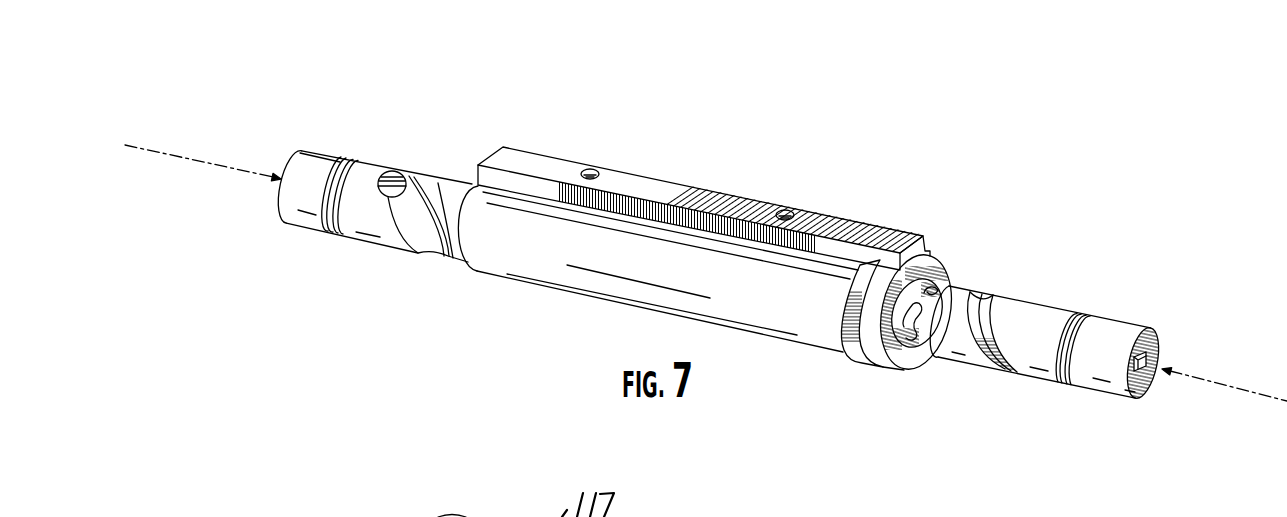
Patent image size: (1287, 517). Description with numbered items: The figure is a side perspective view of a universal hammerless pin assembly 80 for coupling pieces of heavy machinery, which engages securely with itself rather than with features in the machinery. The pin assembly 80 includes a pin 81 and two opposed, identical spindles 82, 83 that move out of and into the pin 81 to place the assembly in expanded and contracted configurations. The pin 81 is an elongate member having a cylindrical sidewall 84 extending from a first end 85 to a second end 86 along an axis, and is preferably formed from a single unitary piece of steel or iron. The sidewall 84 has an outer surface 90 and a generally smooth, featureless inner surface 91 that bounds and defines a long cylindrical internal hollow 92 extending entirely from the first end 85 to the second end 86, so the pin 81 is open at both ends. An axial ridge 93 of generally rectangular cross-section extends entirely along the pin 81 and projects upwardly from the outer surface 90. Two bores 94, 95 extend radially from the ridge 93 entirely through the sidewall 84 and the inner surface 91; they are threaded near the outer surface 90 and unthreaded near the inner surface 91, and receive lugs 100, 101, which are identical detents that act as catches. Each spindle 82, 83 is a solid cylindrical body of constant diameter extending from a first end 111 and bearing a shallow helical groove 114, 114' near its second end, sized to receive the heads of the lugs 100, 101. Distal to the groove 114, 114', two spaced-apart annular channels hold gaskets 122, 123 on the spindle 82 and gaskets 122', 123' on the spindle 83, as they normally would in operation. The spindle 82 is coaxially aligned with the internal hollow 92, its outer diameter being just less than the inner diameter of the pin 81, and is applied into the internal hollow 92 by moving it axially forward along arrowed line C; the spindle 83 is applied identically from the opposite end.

The pin assembly 80 is at (453, 352).
The pin 81 is at (732, 189).
The spindle 82 is at (1042, 295).
The spindle 83 is at (379, 168).
The cylindrical sidewall 84 is at (551, 288).
The first end 85 is at (918, 348).
The second end 86 is at (465, 272).
The outer surface 90 is at (806, 345).
The inner surface 91 is at (934, 286).
The internal hollow 92 is at (873, 368).
The axial ridge 93 is at (884, 238).
The bore 94 is at (794, 214).
The bore 95 is at (600, 173).
The lug 100 is at (785, 208).
The lug 101 is at (586, 167).
The first end 111 is at (1140, 385).
The groove 114 is at (992, 380).
The groove 114' is at (430, 187).
The gasket 122 is at (1105, 327).
The gasket 122' is at (364, 225).
The gasket 123 is at (1092, 309).
The gasket 123' is at (347, 242).
The arrowed line C is at (231, 167).